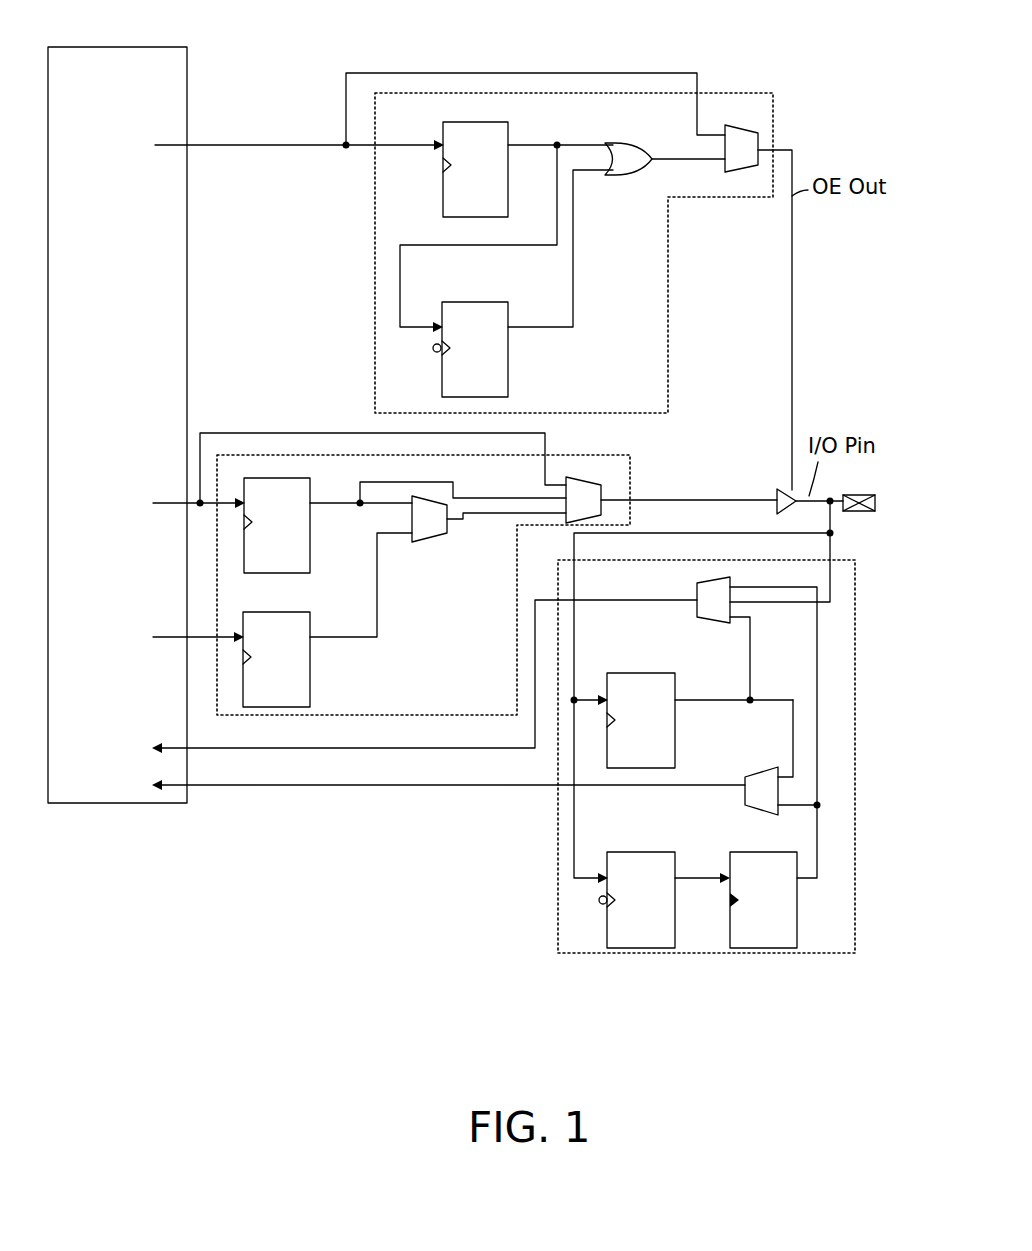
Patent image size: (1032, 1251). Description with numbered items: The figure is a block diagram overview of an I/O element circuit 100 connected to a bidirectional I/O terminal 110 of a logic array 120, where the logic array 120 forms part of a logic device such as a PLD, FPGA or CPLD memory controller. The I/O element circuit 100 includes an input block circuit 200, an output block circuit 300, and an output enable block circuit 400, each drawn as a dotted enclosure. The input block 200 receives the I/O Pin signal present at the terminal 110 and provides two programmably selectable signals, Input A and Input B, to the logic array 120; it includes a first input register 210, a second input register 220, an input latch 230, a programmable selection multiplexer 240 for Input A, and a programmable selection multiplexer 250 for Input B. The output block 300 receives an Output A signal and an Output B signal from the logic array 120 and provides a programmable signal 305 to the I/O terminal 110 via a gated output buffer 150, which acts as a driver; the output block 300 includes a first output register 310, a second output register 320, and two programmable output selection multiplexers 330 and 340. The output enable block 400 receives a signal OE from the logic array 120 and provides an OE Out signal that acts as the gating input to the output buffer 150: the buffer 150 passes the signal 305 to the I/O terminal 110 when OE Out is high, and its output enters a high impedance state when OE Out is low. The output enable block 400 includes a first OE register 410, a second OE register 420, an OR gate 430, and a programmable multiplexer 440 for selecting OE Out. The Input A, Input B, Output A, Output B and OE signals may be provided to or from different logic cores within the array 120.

The I/O element circuit 100 is at (312, 972).
The bidirectional I/O terminal 110 is at (852, 495).
The logic array 120 is at (133, 47).
The gated output buffer 150 is at (777, 492).
The input block circuit 200 is at (557, 890).
The first input register 210 is at (675, 739).
The second input register 220 is at (675, 925).
The input latch 230 is at (797, 925).
The programmable selection multiplexer for Input A 240 is at (708, 623).
The programmable selection multiplexer for Input B 250 is at (750, 777).
The output block circuit 300 is at (360, 715).
The programmable signal 305 is at (676, 502).
The first output register 310 is at (310, 548).
The second output register 320 is at (310, 683).
The programmable output selection multiplexer 330 is at (432, 542).
The programmable output selection multiplexer 340 is at (592, 466).
The output enable block circuit 400 is at (606, 413).
The first OE register 410 is at (443, 184).
The second OE register 420 is at (442, 366).
The OR gate 430 is at (616, 176).
The programmable multiplexer 440 is at (727, 120).